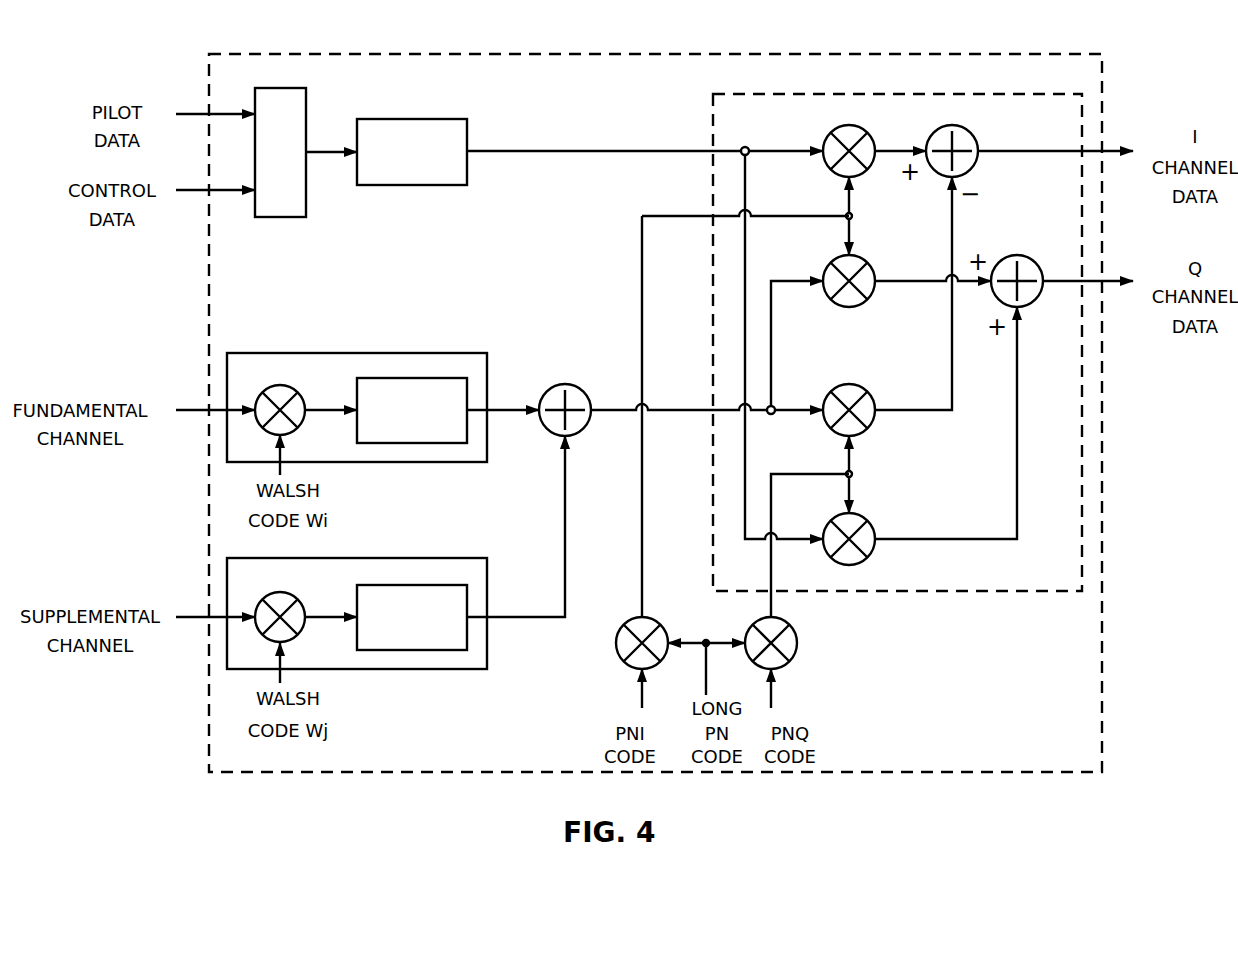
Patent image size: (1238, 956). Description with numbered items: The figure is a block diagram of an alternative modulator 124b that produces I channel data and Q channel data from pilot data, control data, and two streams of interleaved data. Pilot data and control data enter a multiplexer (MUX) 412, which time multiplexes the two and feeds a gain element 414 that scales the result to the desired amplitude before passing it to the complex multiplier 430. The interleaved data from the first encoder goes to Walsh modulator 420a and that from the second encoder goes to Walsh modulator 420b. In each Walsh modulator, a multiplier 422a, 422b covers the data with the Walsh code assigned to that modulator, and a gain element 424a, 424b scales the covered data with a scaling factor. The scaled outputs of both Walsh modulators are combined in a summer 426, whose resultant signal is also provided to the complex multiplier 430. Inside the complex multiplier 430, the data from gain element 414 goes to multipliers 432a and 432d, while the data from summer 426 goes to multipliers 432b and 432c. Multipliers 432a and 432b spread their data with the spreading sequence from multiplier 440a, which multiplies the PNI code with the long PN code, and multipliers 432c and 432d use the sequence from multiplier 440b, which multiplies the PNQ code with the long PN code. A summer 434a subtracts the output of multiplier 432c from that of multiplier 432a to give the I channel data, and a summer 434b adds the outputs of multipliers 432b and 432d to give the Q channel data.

The alternative modulator 124b is at (566, 55).
The multiplexer (MUX) 412 is at (260, 87).
The gain element 414 is at (377, 122).
The Walsh modulator 420a is at (340, 352).
The Walsh modulator 420b is at (340, 558).
The multiplier 422a is at (285, 385).
The multiplier 422b is at (285, 592).
The gain element 424a is at (377, 374).
The gain element 424b is at (377, 581).
The summer 426 is at (566, 385).
The complex multiplier 430 is at (773, 92).
The multiplier 432a is at (847, 125).
The multiplier 432b is at (848, 308).
The multiplier 432c is at (850, 386).
The multiplier 432d is at (850, 566).
The summer 434a is at (950, 125).
The summer 434b is at (1020, 257).
The multiplier 440a is at (653, 620).
The multiplier 440b is at (783, 620).